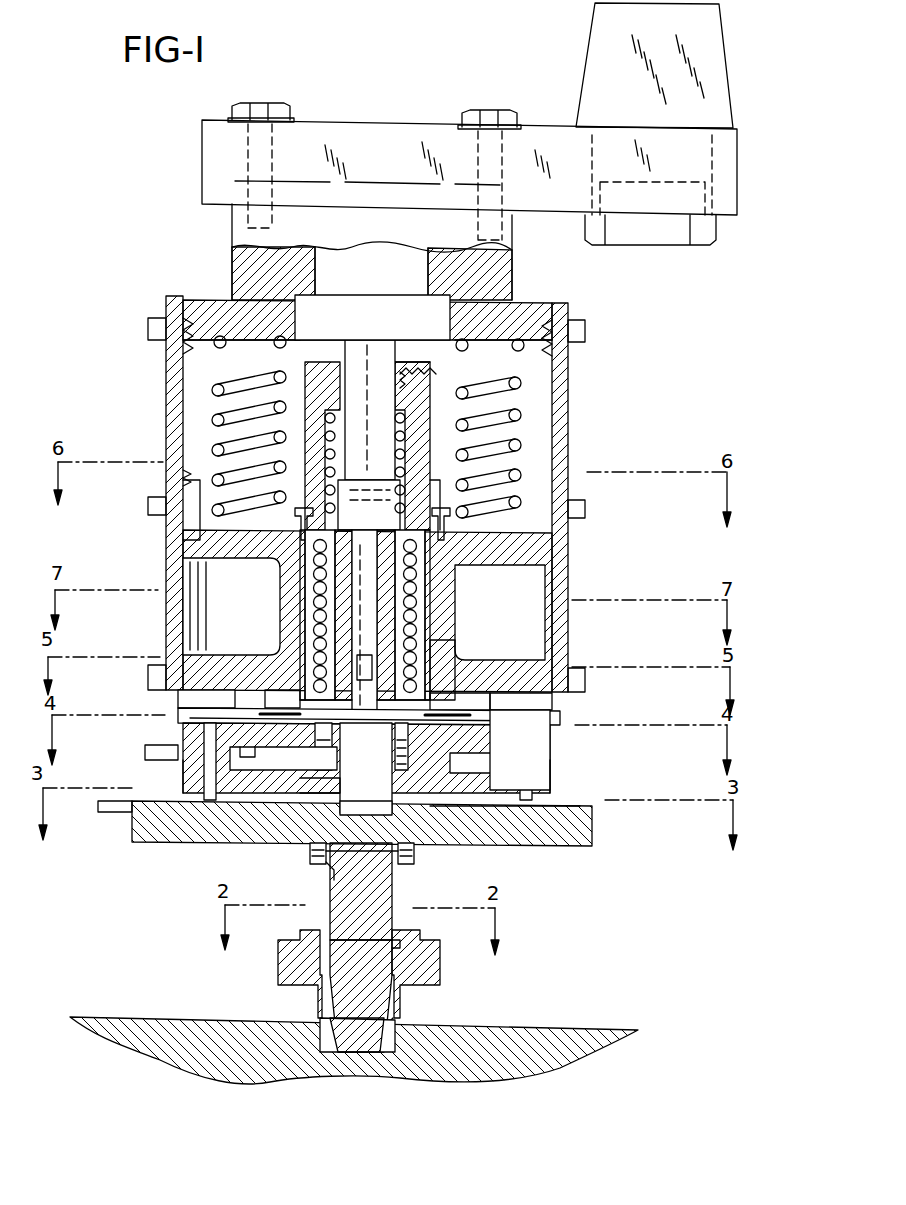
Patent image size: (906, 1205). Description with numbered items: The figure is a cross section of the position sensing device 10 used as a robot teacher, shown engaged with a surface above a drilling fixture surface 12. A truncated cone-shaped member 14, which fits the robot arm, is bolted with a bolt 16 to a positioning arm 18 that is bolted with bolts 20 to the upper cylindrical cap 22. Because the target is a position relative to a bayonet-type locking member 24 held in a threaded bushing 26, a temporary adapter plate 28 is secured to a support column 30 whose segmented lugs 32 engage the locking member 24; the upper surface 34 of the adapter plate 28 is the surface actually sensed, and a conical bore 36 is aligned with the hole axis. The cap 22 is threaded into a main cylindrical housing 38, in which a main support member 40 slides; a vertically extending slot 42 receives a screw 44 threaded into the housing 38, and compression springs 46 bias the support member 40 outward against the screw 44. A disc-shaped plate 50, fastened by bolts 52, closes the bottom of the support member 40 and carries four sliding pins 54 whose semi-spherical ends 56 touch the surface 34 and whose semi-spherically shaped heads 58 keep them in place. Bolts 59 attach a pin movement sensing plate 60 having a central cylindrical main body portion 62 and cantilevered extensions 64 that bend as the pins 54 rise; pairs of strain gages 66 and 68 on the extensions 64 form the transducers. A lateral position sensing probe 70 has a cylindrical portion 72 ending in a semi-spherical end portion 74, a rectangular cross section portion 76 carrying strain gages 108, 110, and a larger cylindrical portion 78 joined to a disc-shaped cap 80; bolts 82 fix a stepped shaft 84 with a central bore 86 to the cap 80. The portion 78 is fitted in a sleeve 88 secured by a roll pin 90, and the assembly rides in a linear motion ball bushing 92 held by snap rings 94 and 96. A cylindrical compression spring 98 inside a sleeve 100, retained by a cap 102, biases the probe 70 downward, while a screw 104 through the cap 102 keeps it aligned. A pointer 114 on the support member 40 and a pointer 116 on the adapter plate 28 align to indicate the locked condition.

The position sensing device 10 is at (598, 406).
The surface 12 is at (598, 1028).
The truncated cone-shaped member 14 is at (598, 38).
The bolt 16 is at (655, 235).
The positioning arm 18 is at (346, 128).
The bolts 20 is at (262, 103).
The upper cylindrical cap 22 is at (510, 262).
The bayonet-type locking member 24 is at (278, 975).
The threaded bushing 26 is at (400, 1030).
The adapter plate 28 is at (495, 832).
The support column 30 is at (392, 882).
The segmented lugs 32 is at (420, 945).
The upper surface 34 is at (592, 806).
The conical bore 36 is at (310, 855).
The main cylindrical housing 38 is at (560, 450).
The main support member 40 is at (552, 540).
The vertically extending slot 42 is at (185, 522).
The screw 44 is at (178, 480).
The compression springs 46 is at (185, 362).
The plate 50 is at (550, 775).
The bolts 52 is at (212, 762).
The pins 54 is at (190, 750).
The semi-spherical ends 56 is at (212, 800).
The semi-spherically shaped heads 58 is at (180, 718).
The bolts 59 is at (305, 793).
The pin movement sensing plate 60 is at (450, 773).
The central cylindrical main body portion 62 is at (262, 770).
The cantilevered extensions 64 is at (185, 700).
The strain gage 66 is at (272, 690).
The strain gage 68 is at (302, 690).
The lateral position sensing probe 70 is at (414, 852).
The cylindrical portion 72 is at (310, 851).
The semi-spherical end portion 74 is at (330, 870).
The rectangular cross section portion 76 is at (378, 625).
The cylindrical portion 78 is at (390, 600).
The disc-shaped cap 80 is at (418, 520).
The bolts 82 is at (320, 510).
The stepped shaft 84 is at (345, 372).
The central bore 86 is at (370, 370).
The sleeve 88 is at (312, 548).
The roll pin 90 is at (420, 560).
The linear motion ball bushing 92 is at (312, 570).
The snap ring 94 is at (412, 700).
The snap ring 96 is at (448, 520).
The cylindrical compression spring 98 is at (318, 455).
The sleeve 100 is at (412, 455).
The cap 102 is at (435, 378).
The screw 104 is at (428, 372).
The strain gage 108 is at (312, 595).
The strain gage 110 is at (432, 640).
The pointer 114 is at (148, 752).
The pointer 116 is at (105, 812).